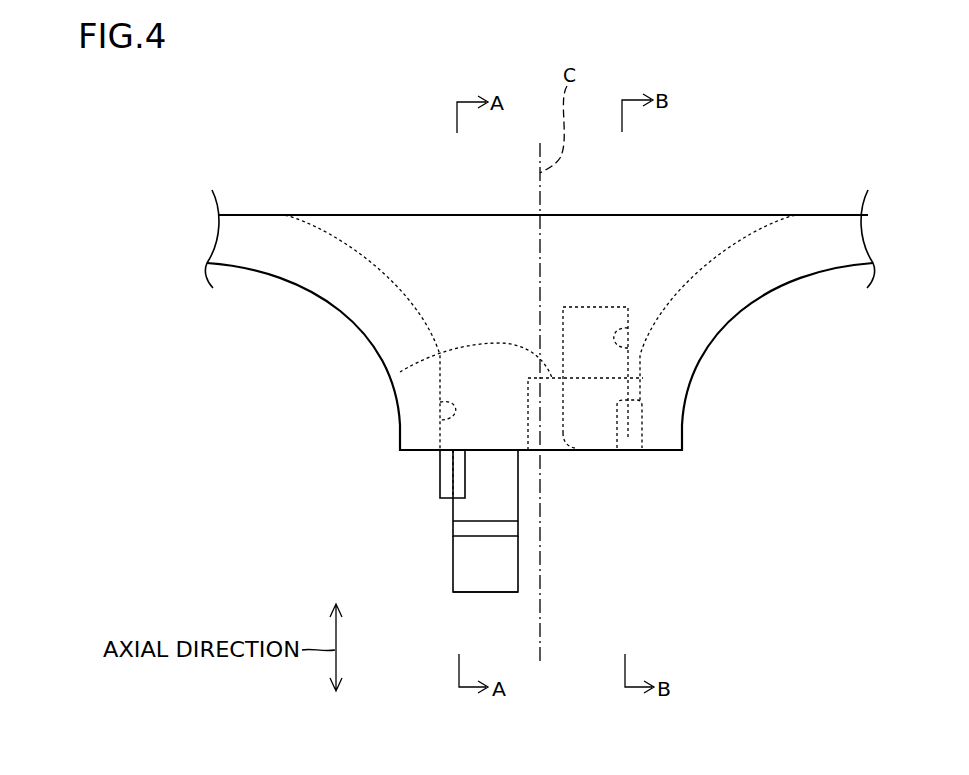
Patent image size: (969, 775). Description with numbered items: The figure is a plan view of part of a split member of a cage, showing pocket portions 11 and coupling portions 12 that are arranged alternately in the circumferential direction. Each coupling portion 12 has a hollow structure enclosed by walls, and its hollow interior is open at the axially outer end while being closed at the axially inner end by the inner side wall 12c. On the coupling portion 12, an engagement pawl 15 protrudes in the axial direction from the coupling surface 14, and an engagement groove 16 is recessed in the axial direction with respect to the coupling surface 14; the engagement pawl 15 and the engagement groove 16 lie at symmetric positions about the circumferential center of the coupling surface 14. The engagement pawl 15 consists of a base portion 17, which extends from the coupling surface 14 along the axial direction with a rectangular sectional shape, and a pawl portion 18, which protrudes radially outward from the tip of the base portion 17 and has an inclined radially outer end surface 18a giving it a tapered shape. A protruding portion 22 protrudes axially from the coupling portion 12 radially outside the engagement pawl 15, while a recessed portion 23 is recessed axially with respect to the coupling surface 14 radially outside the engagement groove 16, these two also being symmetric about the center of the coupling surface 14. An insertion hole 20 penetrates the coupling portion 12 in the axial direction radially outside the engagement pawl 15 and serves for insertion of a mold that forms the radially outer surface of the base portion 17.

The pocket portion 11 is at (255, 238).
The coupling portion 12 is at (418, 230).
The inner side wall 12c is at (400, 372).
The coupling surface 14 is at (657, 451).
The engagement pawl 15 is at (428, 553).
The engagement groove 16 is at (632, 350).
The base portion 17 is at (518, 492).
The pawl portion 18 is at (453, 571).
The radially outer end surface 18a is at (508, 568).
The insertion hole 20 is at (440, 416).
The protruding portion 22 is at (440, 478).
The recessed portion 23 is at (648, 419).